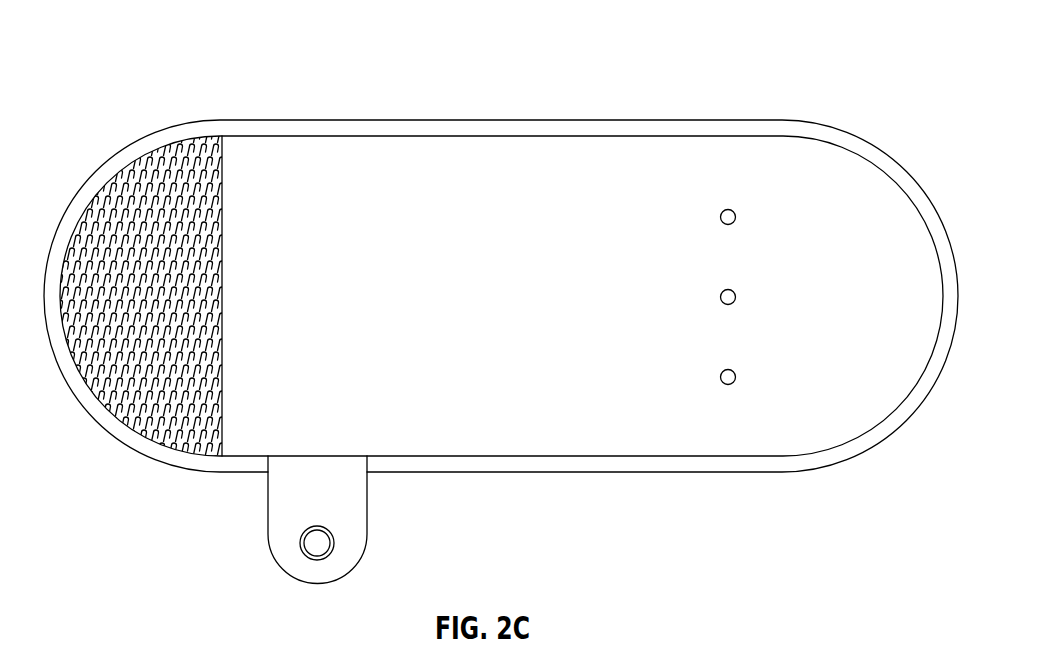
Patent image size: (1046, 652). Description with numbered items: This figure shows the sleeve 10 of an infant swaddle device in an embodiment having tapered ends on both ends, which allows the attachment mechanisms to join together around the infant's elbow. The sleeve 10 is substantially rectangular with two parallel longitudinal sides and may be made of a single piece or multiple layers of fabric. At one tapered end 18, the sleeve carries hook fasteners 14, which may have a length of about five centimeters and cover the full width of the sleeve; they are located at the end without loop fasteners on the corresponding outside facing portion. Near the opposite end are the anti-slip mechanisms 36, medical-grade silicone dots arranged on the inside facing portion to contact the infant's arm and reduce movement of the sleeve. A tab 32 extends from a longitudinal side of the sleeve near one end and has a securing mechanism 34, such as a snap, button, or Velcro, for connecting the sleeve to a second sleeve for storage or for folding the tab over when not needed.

The sleeve 10 is at (798, 71).
The hook fasteners 14 is at (137, 182).
The tapered end 18 is at (105, 453).
The tab 32 is at (358, 566).
The securing mechanism 34 is at (300, 541).
The anti-slip mechanisms 36 is at (733, 209).